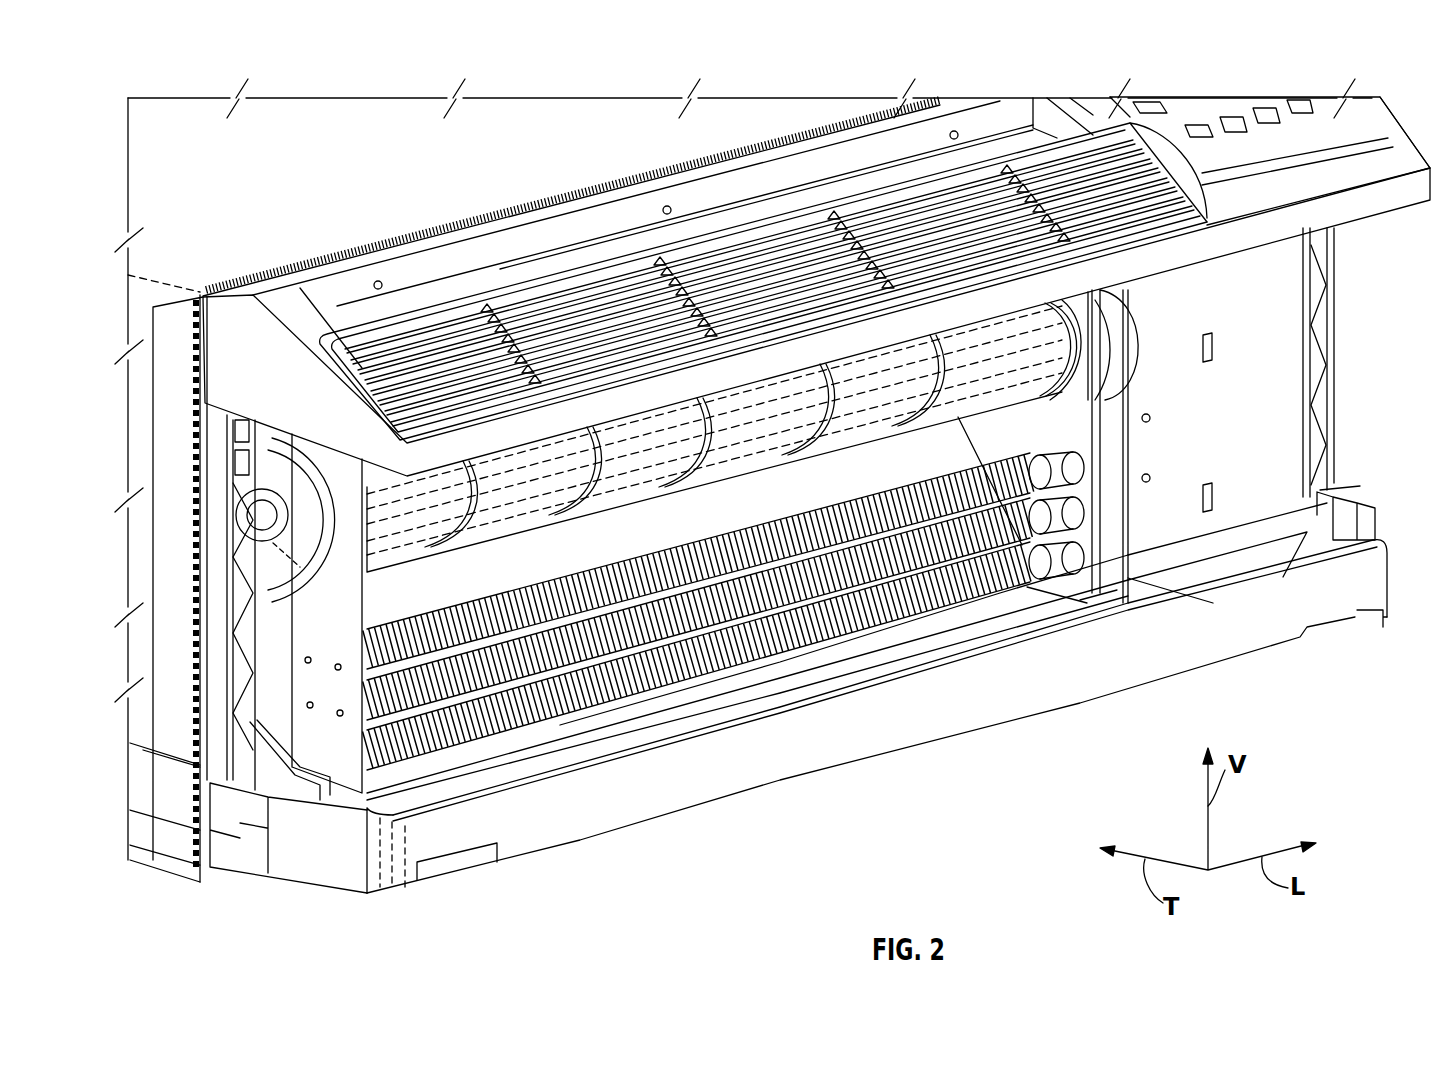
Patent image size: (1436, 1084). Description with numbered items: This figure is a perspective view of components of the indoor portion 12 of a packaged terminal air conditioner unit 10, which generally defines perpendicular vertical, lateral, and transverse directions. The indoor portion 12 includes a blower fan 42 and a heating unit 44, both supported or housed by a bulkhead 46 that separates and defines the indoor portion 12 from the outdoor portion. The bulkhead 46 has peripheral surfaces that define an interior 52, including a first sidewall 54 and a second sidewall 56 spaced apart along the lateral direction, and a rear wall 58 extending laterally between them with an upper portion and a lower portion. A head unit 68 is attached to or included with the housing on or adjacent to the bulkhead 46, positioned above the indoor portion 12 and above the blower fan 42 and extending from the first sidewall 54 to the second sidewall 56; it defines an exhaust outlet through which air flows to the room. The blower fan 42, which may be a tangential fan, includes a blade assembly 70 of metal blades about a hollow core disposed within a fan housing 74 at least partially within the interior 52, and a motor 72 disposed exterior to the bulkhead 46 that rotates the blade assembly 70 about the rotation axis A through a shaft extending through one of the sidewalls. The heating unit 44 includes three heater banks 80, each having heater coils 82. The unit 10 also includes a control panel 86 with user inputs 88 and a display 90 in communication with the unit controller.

The air conditioner unit 10 is at (357, 185).
The indoor portion 12 is at (238, 890).
The blower fan 42 is at (1140, 372).
The heating unit 44 is at (772, 670).
The bulkhead 46 is at (165, 600).
The interior 52 is at (781, 514).
The first sidewall 54 is at (270, 655).
The second sidewall 56 is at (1073, 432).
The rear wall 58 is at (385, 603).
The head unit 68 is at (805, 240).
The blade assembly 70 is at (1045, 370).
The motor 72 is at (1140, 312).
The fan housing 74 is at (1047, 345).
The heater bank 80 is at (517, 729).
The heater coil 82 is at (640, 680).
The control panel 86 is at (1295, 112).
The user input 88 is at (1225, 127).
The display 90 is at (1147, 108).
The rotation axis A is at (250, 508).